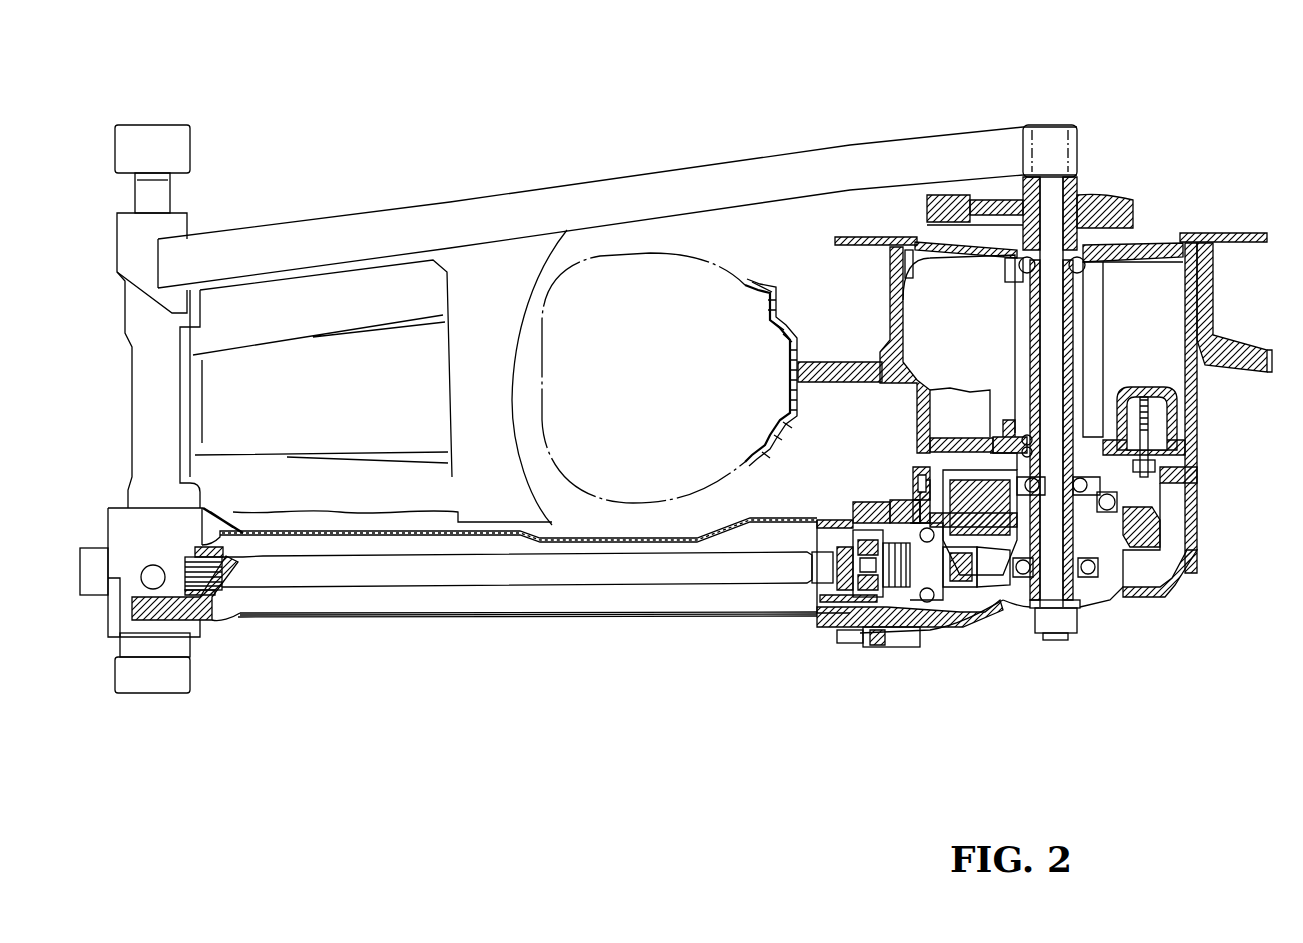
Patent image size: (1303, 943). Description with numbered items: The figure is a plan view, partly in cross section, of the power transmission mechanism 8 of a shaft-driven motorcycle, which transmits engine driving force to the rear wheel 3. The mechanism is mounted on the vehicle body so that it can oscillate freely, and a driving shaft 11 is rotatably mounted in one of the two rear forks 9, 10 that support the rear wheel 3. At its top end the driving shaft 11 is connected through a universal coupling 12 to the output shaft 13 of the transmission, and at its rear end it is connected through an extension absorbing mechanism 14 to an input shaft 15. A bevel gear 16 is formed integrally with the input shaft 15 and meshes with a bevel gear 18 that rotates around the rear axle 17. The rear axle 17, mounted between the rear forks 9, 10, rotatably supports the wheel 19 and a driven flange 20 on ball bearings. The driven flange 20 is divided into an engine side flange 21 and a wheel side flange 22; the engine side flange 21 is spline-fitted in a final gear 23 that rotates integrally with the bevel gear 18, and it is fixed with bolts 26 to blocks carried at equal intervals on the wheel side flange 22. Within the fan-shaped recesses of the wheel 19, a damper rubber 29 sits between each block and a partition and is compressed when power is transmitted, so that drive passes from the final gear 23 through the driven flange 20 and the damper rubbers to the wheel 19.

The rear wheel 3 is at (653, 253).
The power transmission mechanism 8 is at (905, 88).
The rear fork 9 is at (548, 205).
The rear fork 10 is at (420, 615).
The driving shaft 11 is at (533, 575).
The universal coupling 12 is at (205, 620).
The output shaft 13 is at (106, 590).
The extension absorbing mechanism 14 is at (843, 647).
The input shaft 15 is at (910, 647).
The bevel gear 16 is at (967, 623).
The rear axle 17 is at (1036, 330).
The bevel gear 18 is at (1007, 615).
The wheel 19 is at (1248, 353).
The driven flange 20 is at (913, 483).
The engine side flange 21 is at (1165, 460).
The wheel side flange 22 is at (1190, 435).
The final gear 23 is at (1135, 590).
The bolt 26 is at (1163, 393).
The damper rubber 29 is at (1138, 393).